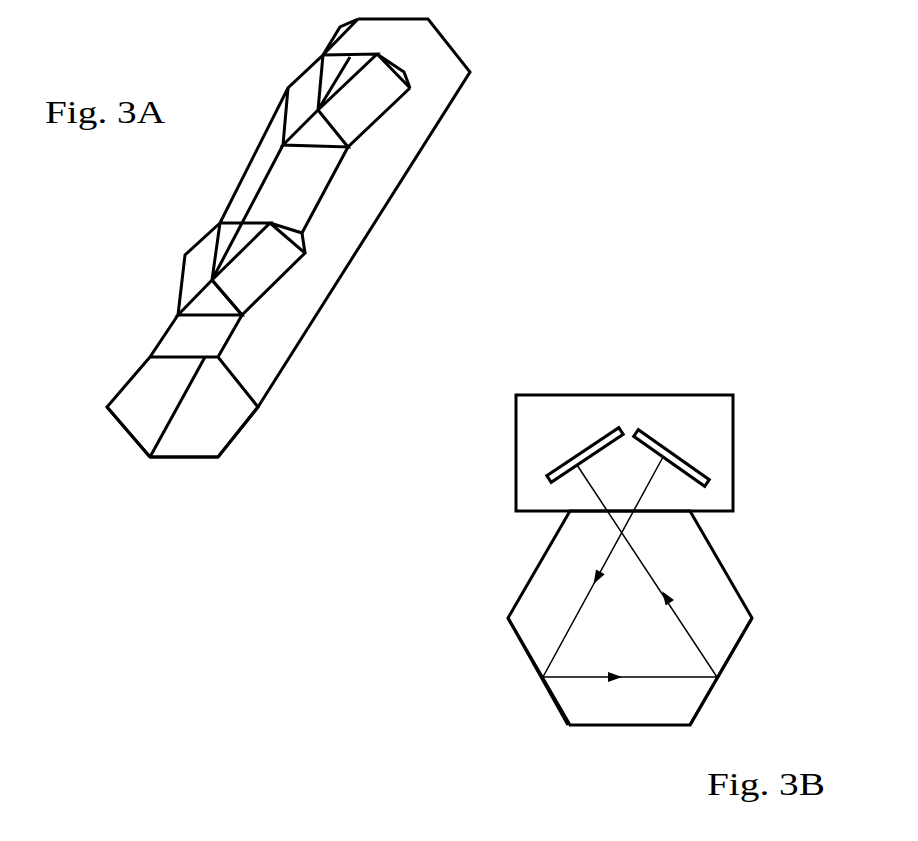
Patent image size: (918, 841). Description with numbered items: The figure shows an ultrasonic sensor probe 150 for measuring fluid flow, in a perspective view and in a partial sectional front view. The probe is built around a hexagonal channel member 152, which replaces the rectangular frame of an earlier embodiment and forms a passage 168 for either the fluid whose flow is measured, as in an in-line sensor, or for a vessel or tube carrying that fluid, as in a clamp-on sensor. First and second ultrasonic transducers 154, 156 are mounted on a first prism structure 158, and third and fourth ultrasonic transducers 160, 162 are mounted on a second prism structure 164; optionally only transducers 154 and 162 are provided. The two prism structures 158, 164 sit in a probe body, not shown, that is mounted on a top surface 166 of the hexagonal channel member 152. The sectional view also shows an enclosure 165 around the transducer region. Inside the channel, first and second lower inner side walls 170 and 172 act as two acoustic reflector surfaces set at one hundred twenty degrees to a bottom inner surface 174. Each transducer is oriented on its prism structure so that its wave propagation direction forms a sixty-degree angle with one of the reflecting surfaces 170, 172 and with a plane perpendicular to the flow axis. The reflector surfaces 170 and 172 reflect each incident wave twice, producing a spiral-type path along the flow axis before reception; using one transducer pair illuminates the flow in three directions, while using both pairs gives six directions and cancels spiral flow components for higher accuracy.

In FIG. 3A, the ultrasonic sensor probe 150 is at (470, 171).
In FIG. 3A, the hexagonal channel member 152 is at (348, 207).
In FIG. 3A, the first ultrasonic transducer 154 is at (186, 262).
In FIG. 3B, the first ultrasonic transducer 154 is at (577, 457).
In FIG. 3A, the second ultrasonic transducer 156 is at (262, 281).
In FIG. 3A, the first prism structure 158 is at (258, 279).
In FIG. 3A, the third ultrasonic transducer 160 is at (313, 65).
In FIG. 3A, the fourth ultrasonic transducer 162 is at (403, 68).
In FIG. 3B, the fourth ultrasonic transducer 162 is at (680, 457).
In FIG. 3A, the second prism structure 164 is at (392, 114).
In FIG. 3B, the mirror housing 165 is at (734, 440).
In FIG. 3A, the top surface 166 is at (217, 338).
In FIG. 3B, the top surface 166 is at (663, 511).
In FIG. 3A, the passage 168 is at (195, 413).
In FIG. 3A, the first lower inner side wall 170 is at (133, 437).
In FIG. 3B, the first lower inner side wall 170 is at (532, 647).
In FIG. 3A, the second lower inner side wall 172 is at (252, 417).
In FIG. 3B, the second lower inner side wall 172 is at (731, 645).
In FIG. 3A, the bottom inner surface 174 is at (178, 452).